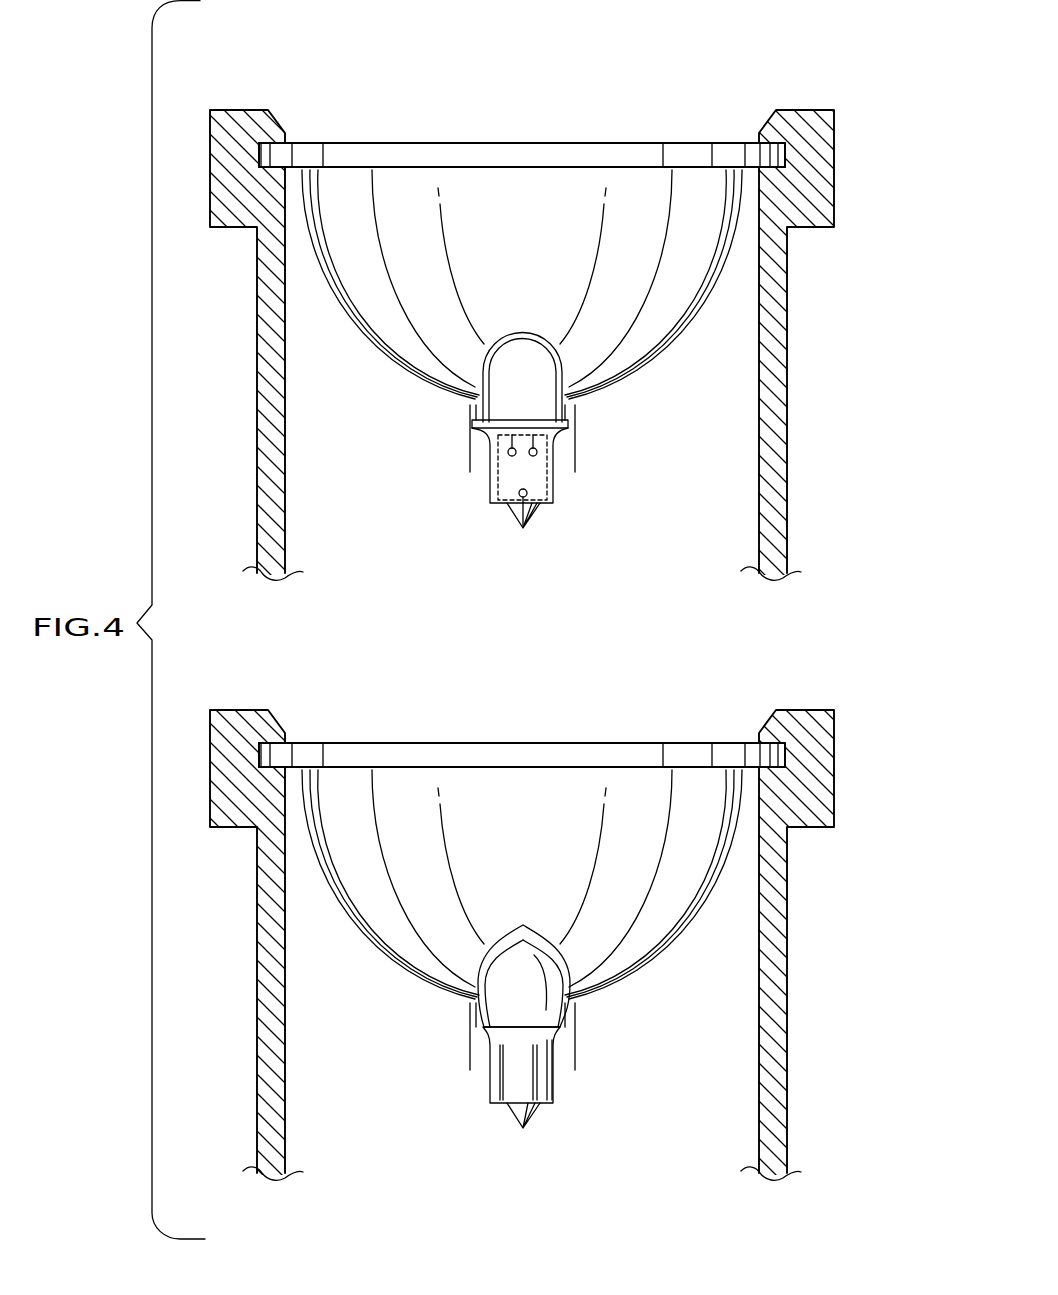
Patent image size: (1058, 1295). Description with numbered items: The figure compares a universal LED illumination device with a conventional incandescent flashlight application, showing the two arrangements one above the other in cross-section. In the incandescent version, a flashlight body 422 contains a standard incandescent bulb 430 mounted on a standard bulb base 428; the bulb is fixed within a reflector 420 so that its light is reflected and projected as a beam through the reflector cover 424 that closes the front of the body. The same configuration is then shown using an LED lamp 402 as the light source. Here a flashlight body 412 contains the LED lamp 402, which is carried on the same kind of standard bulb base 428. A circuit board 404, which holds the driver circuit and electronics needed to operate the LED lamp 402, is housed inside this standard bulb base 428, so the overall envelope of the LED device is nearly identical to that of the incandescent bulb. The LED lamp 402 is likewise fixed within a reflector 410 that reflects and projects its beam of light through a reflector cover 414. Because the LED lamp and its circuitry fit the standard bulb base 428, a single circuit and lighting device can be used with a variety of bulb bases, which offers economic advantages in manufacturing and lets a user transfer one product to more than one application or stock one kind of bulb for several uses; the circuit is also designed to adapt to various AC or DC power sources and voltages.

The LED lamp 402 is at (530, 332).
The circuit board 404 is at (498, 467).
The reflector 410 is at (643, 380).
The flashlight body 412 is at (763, 128).
The reflector cover 414 is at (553, 143).
The reflector 420 is at (395, 975).
The flashlight body 422 is at (288, 1080).
The reflector cover 424 is at (427, 743).
The standard bulb base 428 is at (557, 480).
The standard incandescent bulb 430 is at (545, 955).